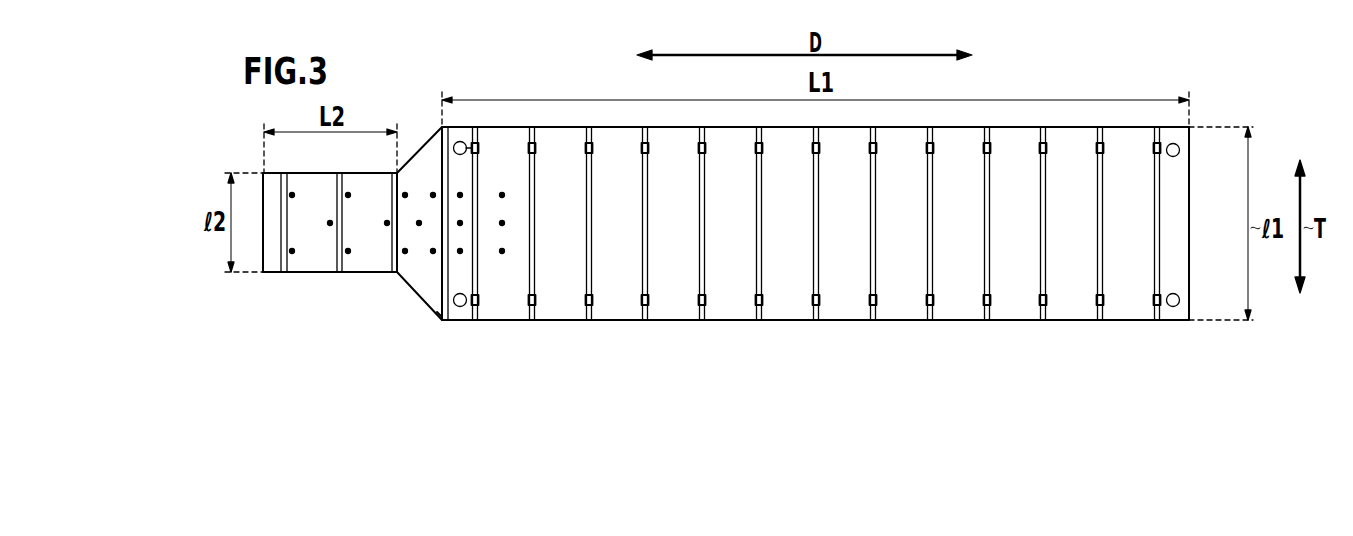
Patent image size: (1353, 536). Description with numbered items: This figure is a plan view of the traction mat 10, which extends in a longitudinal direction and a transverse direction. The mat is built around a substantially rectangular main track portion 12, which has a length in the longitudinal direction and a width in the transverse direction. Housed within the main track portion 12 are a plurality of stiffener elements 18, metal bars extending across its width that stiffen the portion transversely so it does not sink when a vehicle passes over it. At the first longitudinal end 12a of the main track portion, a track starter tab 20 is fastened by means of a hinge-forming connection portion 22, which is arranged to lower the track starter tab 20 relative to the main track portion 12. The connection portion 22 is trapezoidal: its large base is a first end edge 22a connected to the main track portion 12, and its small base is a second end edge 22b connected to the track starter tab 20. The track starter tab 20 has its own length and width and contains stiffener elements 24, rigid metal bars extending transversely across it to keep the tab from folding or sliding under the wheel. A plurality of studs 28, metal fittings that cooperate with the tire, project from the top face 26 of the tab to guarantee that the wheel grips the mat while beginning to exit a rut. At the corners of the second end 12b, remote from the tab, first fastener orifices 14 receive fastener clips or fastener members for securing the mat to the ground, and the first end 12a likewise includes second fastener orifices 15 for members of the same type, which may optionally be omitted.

The traction mat 10 is at (1203, 51).
The main track portion 12 is at (1037, 122).
The first longitudinal end 12a is at (435, 122).
The second end 12b is at (1202, 117).
The first fastener orifices 14 is at (1180, 150).
The second fastener orifices 15 is at (479, 148).
The stiffener elements 18 is at (478, 281).
The track starter tab 20 is at (307, 276).
The hinge-forming connection portion 22 is at (403, 292).
The first end edge 22a is at (442, 299).
The second end edge 22b is at (395, 256).
The stiffener elements 24 is at (343, 185).
The top face 26 is at (330, 187).
The studs 28 is at (506, 195).